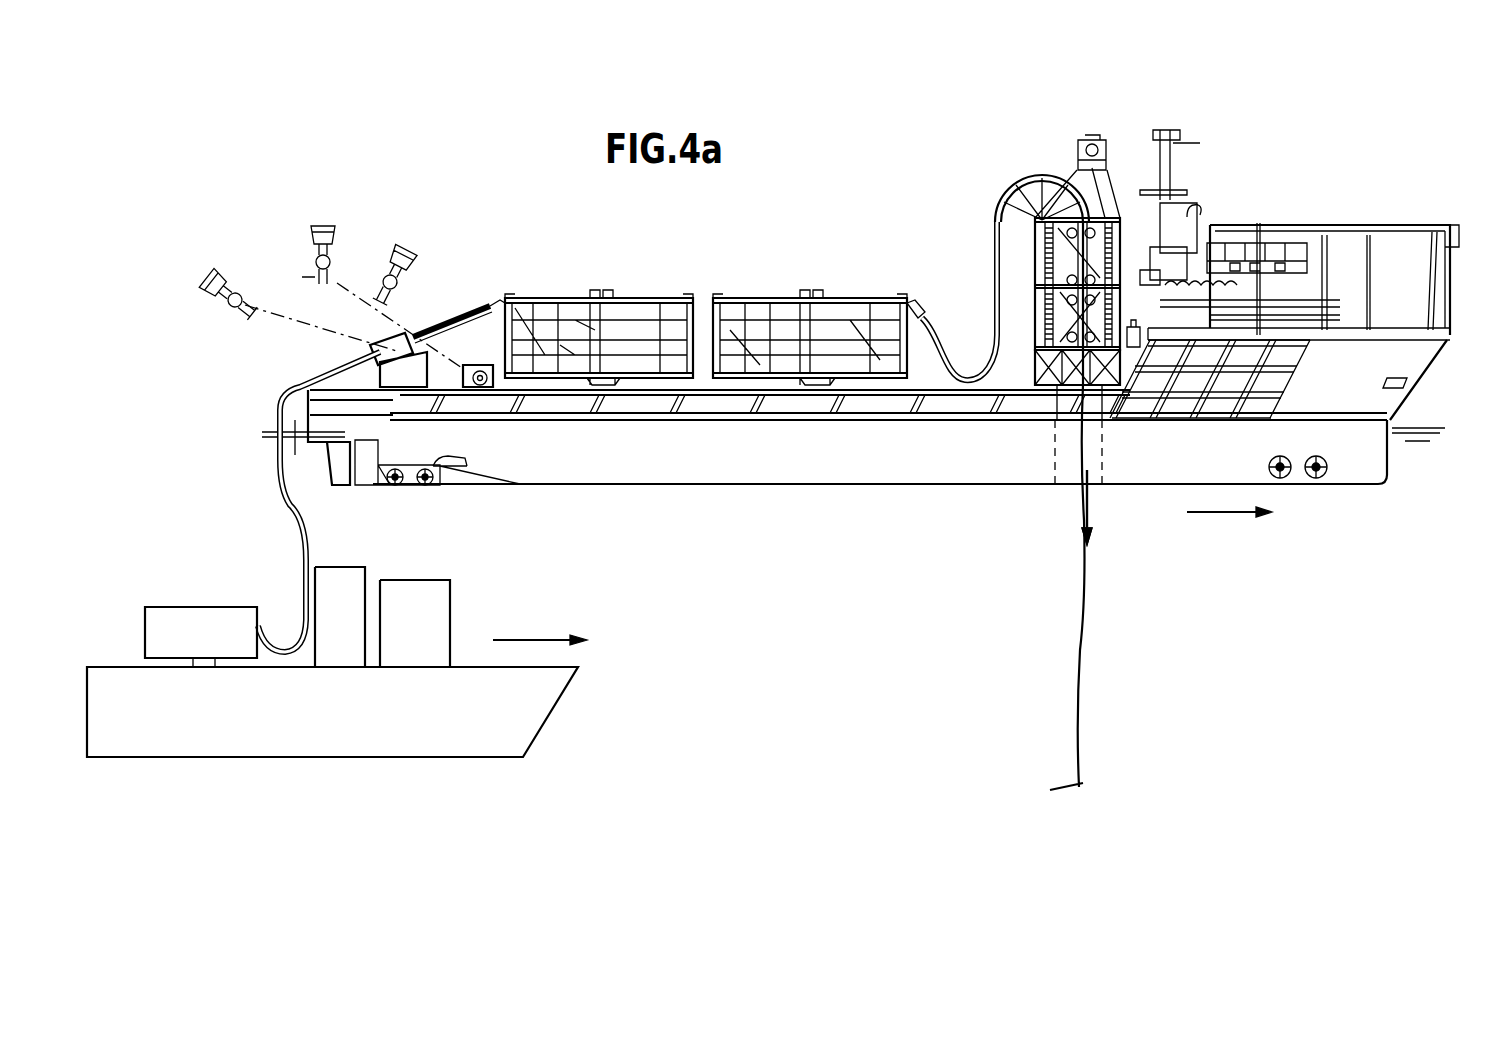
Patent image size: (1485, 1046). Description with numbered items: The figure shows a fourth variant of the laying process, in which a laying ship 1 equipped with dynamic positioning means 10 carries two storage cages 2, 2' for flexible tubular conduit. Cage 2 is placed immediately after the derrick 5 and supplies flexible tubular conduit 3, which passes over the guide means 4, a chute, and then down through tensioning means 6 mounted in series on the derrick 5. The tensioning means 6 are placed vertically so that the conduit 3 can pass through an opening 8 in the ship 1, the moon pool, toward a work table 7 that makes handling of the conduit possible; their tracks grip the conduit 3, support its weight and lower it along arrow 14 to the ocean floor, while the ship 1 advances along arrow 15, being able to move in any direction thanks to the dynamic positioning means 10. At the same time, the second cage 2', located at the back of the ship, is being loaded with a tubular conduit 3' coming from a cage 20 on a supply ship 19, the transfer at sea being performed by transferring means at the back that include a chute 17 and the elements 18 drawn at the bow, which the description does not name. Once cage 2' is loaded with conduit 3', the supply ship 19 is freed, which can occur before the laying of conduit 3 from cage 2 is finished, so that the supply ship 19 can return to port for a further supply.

The laying ship 1 is at (925, 488).
The storage cage 2 is at (810, 309).
The storage cage 2' is at (599, 310).
The flexible tubular conduit 3 is at (1008, 506).
The flexible tubular conduit 3' is at (319, 502).
The guide means 4 is at (1020, 170).
The derrick 5 is at (1033, 282).
The tensioning means 6 is at (1102, 247).
The work table 7 is at (1050, 365).
The opening 8 is at (1103, 452).
The dynamic positioning means 10 is at (1280, 478).
The arrow 14 is at (1092, 503).
The arrow 15 is at (1210, 518).
The chute 17 is at (322, 470).
The spray nozzles 18 is at (315, 255).
The supply ship 19 is at (547, 722).
The cage 20 is at (212, 607).